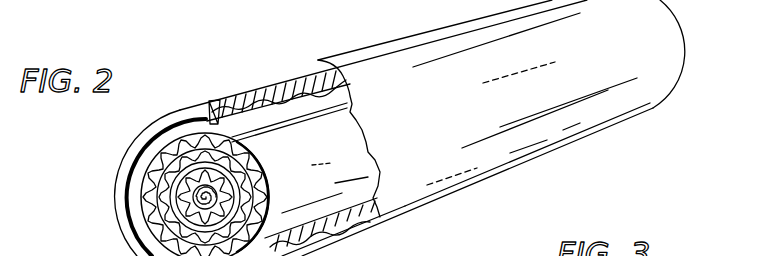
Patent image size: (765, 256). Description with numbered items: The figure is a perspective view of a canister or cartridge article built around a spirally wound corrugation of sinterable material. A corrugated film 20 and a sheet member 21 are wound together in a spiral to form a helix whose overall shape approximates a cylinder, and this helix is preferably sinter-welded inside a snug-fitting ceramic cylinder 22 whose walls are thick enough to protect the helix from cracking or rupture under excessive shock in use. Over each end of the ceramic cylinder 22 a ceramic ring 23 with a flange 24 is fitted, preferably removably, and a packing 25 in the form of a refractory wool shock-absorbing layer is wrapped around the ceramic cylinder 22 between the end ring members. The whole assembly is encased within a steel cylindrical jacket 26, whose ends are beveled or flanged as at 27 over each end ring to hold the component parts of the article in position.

The corrugated film 20 is at (233, 155).
The sheet member 21 is at (267, 187).
The ceramic cylinder 22 is at (343, 82).
The ceramic ring 23 is at (214, 102).
The flange 24 is at (208, 122).
The packing 25 is at (265, 92).
The steel cylindrical jacket 26 is at (627, 57).
The beveled or flanged end 27 is at (117, 186).